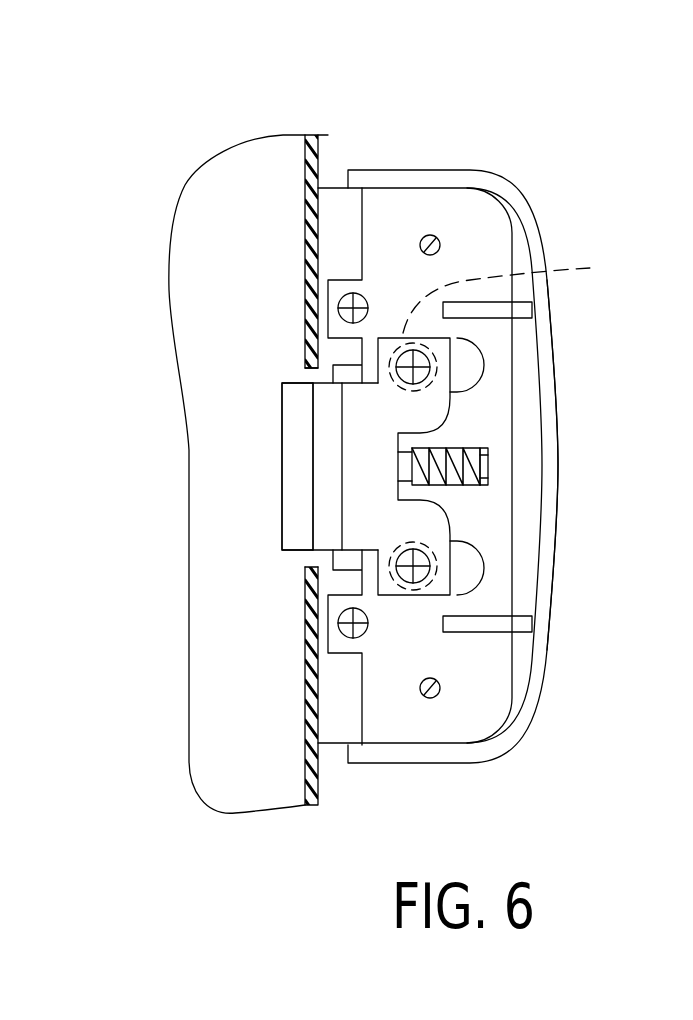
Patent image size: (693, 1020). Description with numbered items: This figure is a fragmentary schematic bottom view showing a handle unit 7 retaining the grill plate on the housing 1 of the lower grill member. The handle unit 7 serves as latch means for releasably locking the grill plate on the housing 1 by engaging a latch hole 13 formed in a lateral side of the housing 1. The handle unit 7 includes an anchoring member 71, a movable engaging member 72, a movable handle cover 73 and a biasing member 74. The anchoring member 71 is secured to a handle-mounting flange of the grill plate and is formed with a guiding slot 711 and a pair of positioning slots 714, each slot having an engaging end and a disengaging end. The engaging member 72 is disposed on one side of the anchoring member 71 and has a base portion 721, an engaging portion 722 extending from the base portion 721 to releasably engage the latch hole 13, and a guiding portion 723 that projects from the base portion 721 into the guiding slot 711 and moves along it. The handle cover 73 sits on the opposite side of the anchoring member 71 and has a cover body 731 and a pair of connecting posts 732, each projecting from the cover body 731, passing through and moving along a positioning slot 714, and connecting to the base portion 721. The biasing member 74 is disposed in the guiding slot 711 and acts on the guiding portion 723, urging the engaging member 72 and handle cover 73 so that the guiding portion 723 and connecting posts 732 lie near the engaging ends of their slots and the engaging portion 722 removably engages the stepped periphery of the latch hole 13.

The housing 1 is at (296, 263).
The latch hole 13 is at (307, 378).
The handle unit 7 is at (457, 156).
The anchoring member 71 is at (512, 505).
The guiding slot 711 is at (519, 452).
The positioning slot 714 is at (450, 342).
The engaging member 72 is at (239, 466).
The base portion 721 is at (367, 462).
The engaging portion 722 is at (290, 438).
The guiding portion 723 is at (402, 468).
The handle cover 73 is at (513, 190).
The cover body 731 is at (535, 217).
The connecting post 732 is at (524, 291).
The biasing member 74 is at (482, 448).